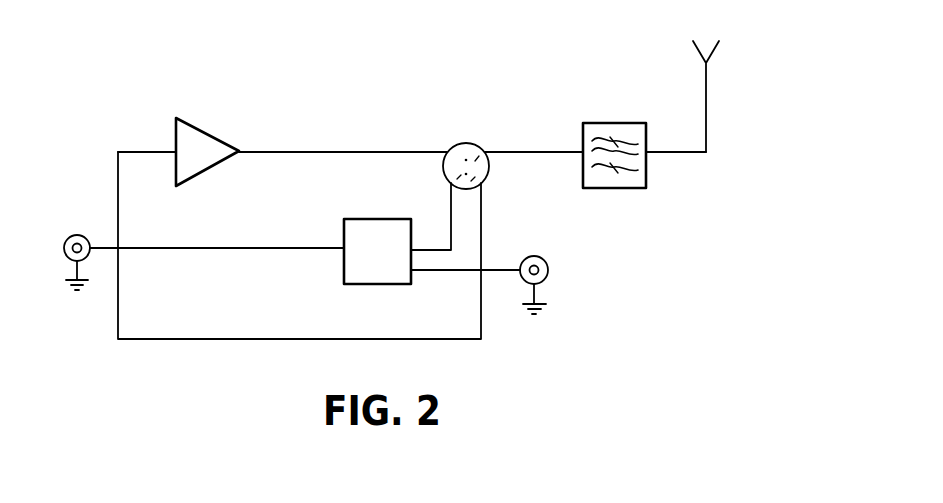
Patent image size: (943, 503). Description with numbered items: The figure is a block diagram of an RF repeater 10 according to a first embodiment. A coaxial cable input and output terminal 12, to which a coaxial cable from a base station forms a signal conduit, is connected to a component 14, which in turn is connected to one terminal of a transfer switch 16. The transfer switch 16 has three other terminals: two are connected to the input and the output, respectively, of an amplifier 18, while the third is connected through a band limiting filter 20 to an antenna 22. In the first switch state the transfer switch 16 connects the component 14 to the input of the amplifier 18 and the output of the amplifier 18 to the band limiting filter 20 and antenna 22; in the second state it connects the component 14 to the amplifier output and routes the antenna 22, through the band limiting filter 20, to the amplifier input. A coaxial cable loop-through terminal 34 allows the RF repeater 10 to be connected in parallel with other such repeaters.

The RF repeater 10 is at (147, 350).
The coaxial cable input and output terminal 12 is at (80, 234).
The component 14 is at (378, 260).
The transfer switch 16 is at (443, 170).
The amplifier 18 is at (205, 172).
The band limiting filter 20 is at (620, 188).
The antenna 22 is at (705, 90).
The coaxial cable loop-through terminal 34 is at (547, 275).